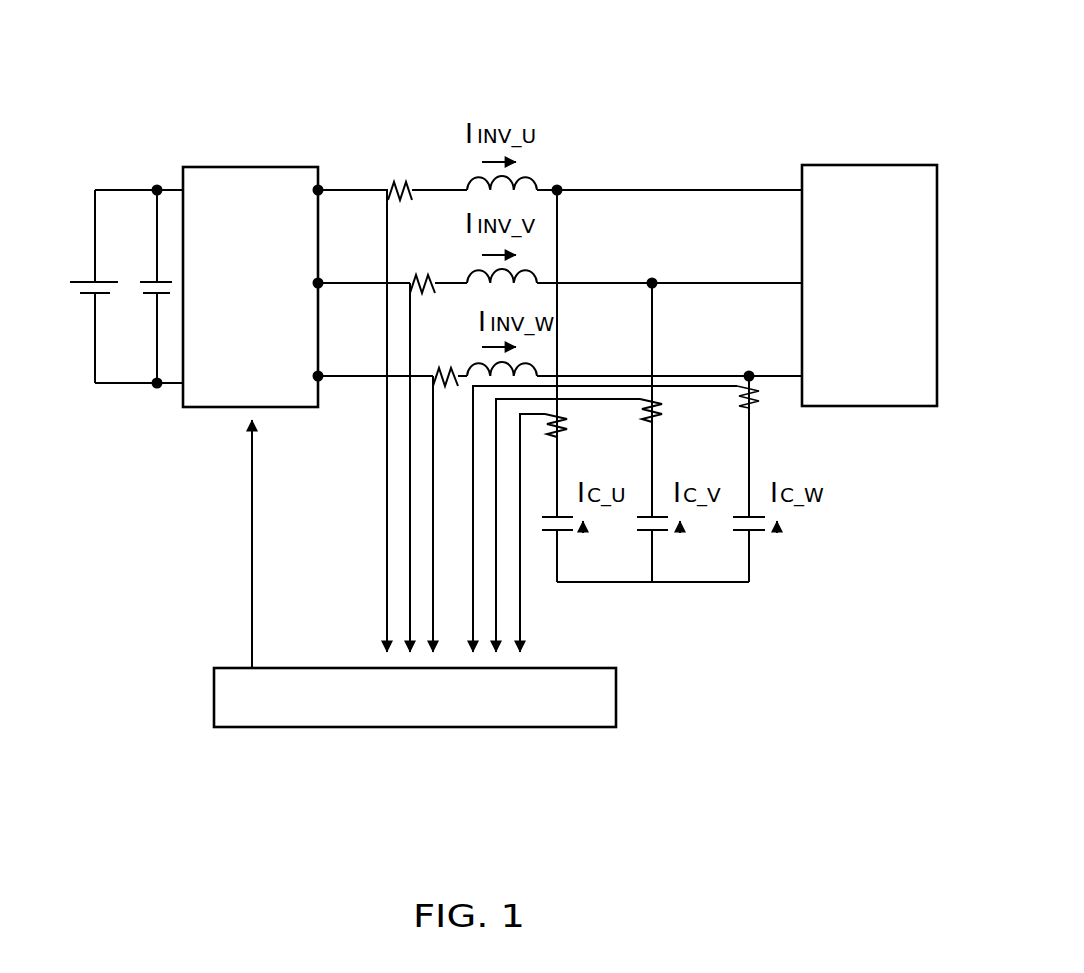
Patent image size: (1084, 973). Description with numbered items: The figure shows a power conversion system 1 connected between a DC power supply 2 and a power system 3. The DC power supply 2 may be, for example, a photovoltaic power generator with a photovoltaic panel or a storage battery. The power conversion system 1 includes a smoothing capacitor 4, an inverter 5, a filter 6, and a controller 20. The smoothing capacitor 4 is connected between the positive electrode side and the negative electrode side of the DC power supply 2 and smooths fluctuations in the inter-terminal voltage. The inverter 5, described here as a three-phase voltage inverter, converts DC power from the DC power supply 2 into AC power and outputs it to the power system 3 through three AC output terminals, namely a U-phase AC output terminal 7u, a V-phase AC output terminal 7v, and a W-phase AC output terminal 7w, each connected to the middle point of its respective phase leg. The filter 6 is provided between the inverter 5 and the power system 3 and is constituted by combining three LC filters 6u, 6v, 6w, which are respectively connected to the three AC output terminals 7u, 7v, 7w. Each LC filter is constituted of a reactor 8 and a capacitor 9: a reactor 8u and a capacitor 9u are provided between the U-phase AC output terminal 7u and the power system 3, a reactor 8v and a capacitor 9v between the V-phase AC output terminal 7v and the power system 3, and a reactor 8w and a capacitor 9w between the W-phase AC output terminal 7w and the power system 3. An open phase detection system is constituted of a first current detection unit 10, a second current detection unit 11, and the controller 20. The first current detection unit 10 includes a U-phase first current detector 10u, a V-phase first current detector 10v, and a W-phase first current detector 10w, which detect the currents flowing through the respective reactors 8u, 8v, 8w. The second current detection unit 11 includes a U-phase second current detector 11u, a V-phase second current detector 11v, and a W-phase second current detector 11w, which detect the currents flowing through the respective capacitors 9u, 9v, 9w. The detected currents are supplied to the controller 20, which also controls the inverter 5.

The power conversion system 1 is at (690, 116).
The DC power supply 2 is at (88, 297).
The power system 3 is at (869, 165).
The smoothing capacitor 4 is at (148, 297).
The inverter 5 is at (210, 407).
The filter 6 is at (671, 464).
The U-phase LC filter 6u is at (585, 428).
The V-phase LC filter 6v is at (666, 488).
The W-phase LC filter 6w is at (755, 535).
The U-phase AC output terminal 7u is at (320, 188).
The V-phase AC output terminal 7v is at (320, 281).
The W-phase AC output terminal 7w is at (320, 374).
The reactor 8 is at (562, 138).
The U-phase reactor 8u is at (540, 186).
The V-phase reactor 8v is at (540, 279).
The W-phase reactor 8w is at (540, 372).
The capacitor 9 is at (770, 547).
The U-phase capacitor 9u is at (548, 534).
The V-phase capacitor 9v is at (640, 533).
The W-phase capacitor 9w is at (735, 533).
The first current detection unit 10 is at (413, 110).
The U-phase first current detector 10u is at (402, 181).
The V-phase first current detector 10v is at (424, 274).
The W-phase first current detector 10w is at (446, 367).
The second current detection unit 11 is at (820, 436).
The U-phase second current detector 11u is at (563, 432).
The V-phase second current detector 11v is at (660, 418).
The W-phase second current detector 11w is at (756, 408).
The controller 20 is at (428, 727).